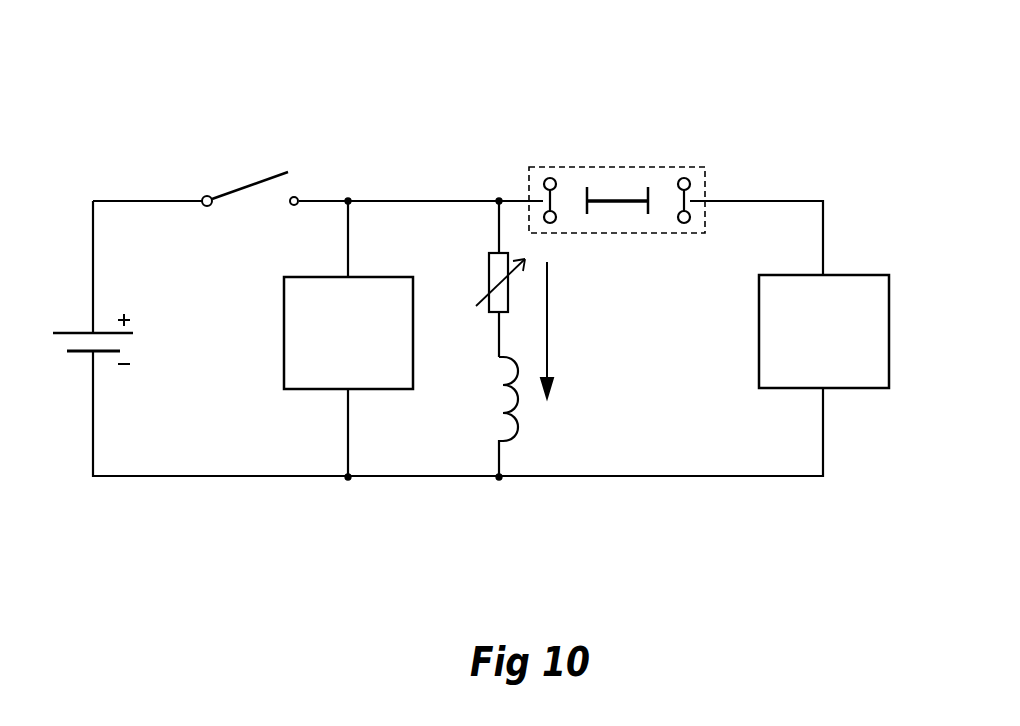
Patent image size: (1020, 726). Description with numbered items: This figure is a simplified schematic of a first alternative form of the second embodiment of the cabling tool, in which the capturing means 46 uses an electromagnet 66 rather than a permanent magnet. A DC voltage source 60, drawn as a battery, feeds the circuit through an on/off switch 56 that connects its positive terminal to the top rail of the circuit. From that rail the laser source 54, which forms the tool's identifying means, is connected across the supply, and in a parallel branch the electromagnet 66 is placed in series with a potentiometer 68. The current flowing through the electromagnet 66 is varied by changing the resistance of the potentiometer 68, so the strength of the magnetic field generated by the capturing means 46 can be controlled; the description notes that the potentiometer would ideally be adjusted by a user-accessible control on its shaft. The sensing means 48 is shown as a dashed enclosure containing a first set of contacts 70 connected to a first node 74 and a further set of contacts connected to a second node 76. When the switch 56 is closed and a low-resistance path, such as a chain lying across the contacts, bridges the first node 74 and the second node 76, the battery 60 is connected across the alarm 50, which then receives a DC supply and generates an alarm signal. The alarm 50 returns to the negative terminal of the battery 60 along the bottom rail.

The capturing means 46 is at (586, 214).
The sensing means 48 is at (648, 162).
The alarm means 50 is at (853, 275).
The laser source 54 is at (393, 389).
The on/off switch 56 is at (258, 184).
The DC voltage source 60 is at (78, 333).
The electromagnet 66 is at (489, 255).
The potentiometer 68 is at (519, 412).
The first set of contacts 70 is at (556, 216).
The first node 74 is at (543, 199).
The second node 76 is at (692, 200).